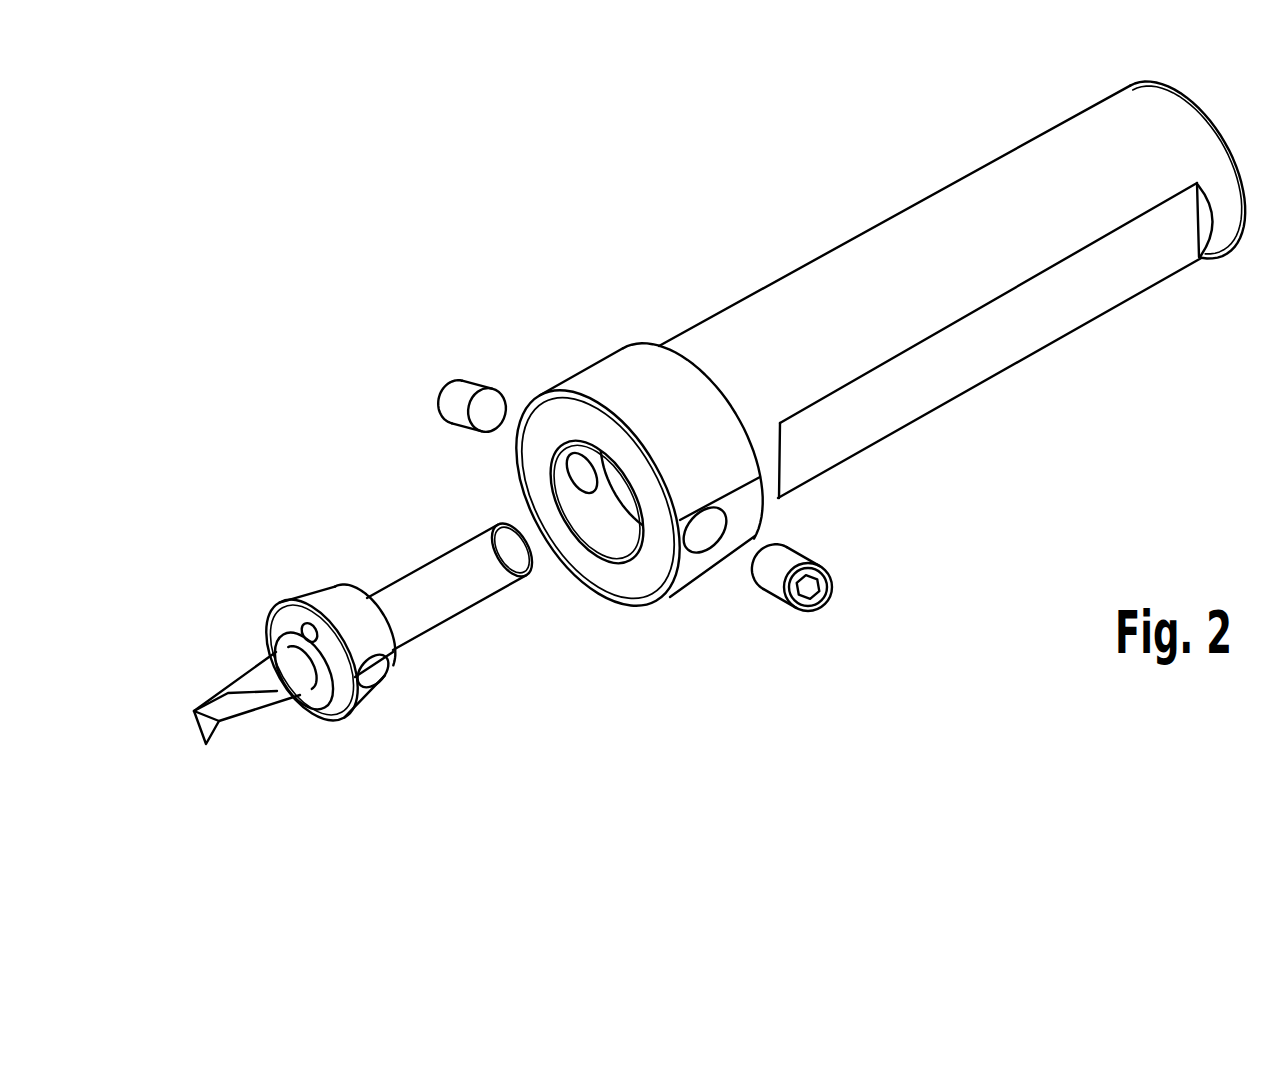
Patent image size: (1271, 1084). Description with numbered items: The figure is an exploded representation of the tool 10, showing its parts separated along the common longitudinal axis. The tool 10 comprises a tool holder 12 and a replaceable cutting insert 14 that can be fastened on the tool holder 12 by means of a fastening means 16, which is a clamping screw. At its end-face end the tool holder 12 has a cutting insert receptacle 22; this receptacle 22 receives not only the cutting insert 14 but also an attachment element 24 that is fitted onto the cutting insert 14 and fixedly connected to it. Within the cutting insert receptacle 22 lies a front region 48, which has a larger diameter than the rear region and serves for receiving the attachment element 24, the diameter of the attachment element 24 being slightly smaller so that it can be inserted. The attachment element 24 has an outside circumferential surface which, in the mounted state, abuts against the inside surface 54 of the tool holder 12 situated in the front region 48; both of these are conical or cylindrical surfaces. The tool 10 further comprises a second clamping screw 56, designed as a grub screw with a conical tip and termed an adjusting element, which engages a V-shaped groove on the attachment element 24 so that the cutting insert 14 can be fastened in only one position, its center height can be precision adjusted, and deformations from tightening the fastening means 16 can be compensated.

The tool 10 is at (490, 190).
The tool holder 12 is at (915, 240).
The cutting insert 14 is at (273, 688).
The fastening means 16 is at (795, 612).
The cutting insert receptacle 22 is at (620, 565).
The attachment element 24 is at (343, 620).
The front region 48 is at (615, 533).
The inside surface 54 is at (596, 502).
The clamping screw 56 is at (470, 388).